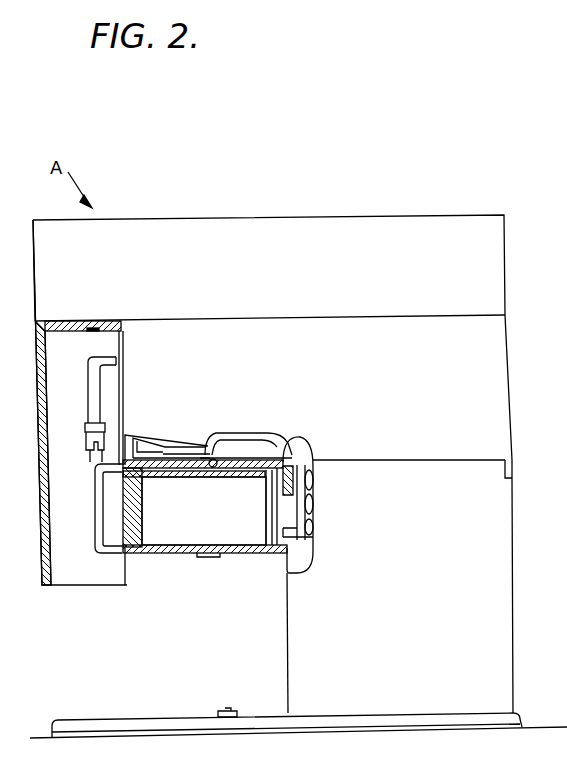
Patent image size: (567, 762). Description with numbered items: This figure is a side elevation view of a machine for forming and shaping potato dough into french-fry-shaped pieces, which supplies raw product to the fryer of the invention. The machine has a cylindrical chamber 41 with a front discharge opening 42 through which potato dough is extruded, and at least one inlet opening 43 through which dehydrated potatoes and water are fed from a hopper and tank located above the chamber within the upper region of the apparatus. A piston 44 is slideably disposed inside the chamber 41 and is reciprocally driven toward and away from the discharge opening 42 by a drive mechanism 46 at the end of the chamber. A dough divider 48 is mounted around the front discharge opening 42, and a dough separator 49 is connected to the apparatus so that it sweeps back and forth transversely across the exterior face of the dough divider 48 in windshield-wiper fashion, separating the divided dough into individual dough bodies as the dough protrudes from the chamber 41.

The cylindrical chamber 41 is at (183, 554).
The front discharge opening 42 is at (120, 540).
The inlet opening 43 is at (213, 468).
The piston 44 is at (272, 554).
The drive mechanism 46 is at (313, 498).
The dough divider 48 is at (118, 484).
The dough separator 49 is at (96, 520).